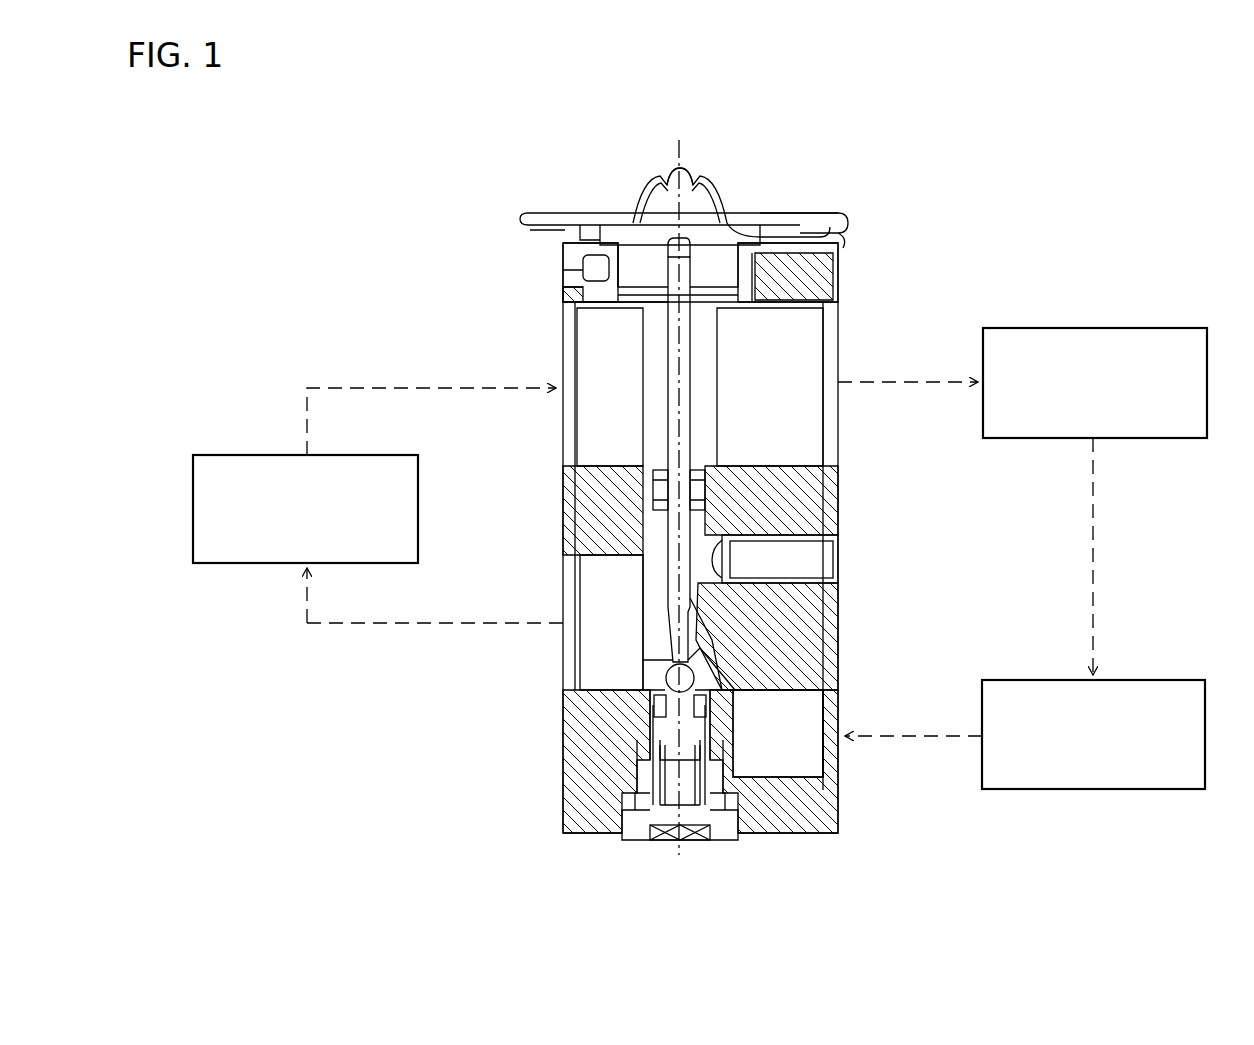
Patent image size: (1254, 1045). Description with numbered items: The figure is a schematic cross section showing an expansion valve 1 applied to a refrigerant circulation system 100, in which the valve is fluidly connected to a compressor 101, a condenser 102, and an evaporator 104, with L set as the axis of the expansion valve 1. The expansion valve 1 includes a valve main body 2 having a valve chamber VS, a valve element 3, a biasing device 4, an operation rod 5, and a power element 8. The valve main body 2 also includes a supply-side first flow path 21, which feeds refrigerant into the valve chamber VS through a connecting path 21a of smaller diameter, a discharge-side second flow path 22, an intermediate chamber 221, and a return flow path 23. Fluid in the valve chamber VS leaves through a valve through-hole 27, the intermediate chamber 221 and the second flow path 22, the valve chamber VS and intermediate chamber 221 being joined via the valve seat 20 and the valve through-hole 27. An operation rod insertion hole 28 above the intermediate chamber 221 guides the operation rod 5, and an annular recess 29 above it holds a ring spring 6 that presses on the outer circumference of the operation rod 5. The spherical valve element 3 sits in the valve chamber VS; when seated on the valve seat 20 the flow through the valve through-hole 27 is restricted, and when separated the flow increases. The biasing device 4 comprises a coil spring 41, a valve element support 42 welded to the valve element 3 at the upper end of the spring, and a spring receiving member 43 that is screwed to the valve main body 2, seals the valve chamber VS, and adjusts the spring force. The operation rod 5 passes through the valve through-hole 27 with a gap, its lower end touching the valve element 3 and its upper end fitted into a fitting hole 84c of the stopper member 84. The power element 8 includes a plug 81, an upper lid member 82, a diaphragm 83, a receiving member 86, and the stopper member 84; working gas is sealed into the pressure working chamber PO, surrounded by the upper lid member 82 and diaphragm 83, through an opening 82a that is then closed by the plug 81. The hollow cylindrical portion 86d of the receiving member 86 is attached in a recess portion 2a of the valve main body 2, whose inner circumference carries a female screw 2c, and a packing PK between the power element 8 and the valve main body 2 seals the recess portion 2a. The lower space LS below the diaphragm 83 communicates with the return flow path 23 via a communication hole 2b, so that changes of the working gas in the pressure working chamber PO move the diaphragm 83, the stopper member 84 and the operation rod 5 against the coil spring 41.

The expansion valve 1 is at (540, 165).
The valve main body 2 is at (700, 592).
The recess portion 2a is at (830, 300).
The communication hole 2b is at (648, 308).
The female screw 2c is at (578, 287).
The valve element 3 is at (715, 712).
The biasing device 4 is at (620, 840).
The operation rod 5 is at (695, 428).
The ring spring 6 is at (660, 493).
The power element 8 is at (522, 220).
The valve seat 20 is at (657, 695).
The first flow path 21 is at (785, 728).
The connecting path 21a is at (770, 748).
The second flow path 22 is at (640, 655).
The intermediate chamber 221 is at (657, 625).
The return flow path 23 is at (640, 432).
The valve through-hole 27 is at (688, 652).
The operation rod insertion hole 28 is at (725, 545).
The annular recess 29 is at (706, 493).
The coil spring 41 is at (703, 812).
The valve element support 42 is at (663, 717).
The spring receiving member 43 is at (645, 832).
The plug 81 is at (687, 175).
The upper lid member 82 is at (712, 205).
The opening 82a is at (672, 178).
The diaphragm 83 is at (765, 240).
The stopper member 84 is at (640, 205).
The fitting hole 84c is at (700, 307).
The receiving member 86 is at (558, 236).
The hollow cylindrical portion 86d is at (600, 270).
The refrigerant circulation system 100 is at (1090, 186).
The compressor 101 is at (1120, 328).
The condenser 102 is at (1130, 680).
The evaporator 104 is at (238, 455).
The axis L is at (680, 486).
The lower space LS is at (845, 230).
The packing PK is at (822, 263).
The pressure working chamber PO is at (770, 212).
The valve chamber VS is at (655, 748).